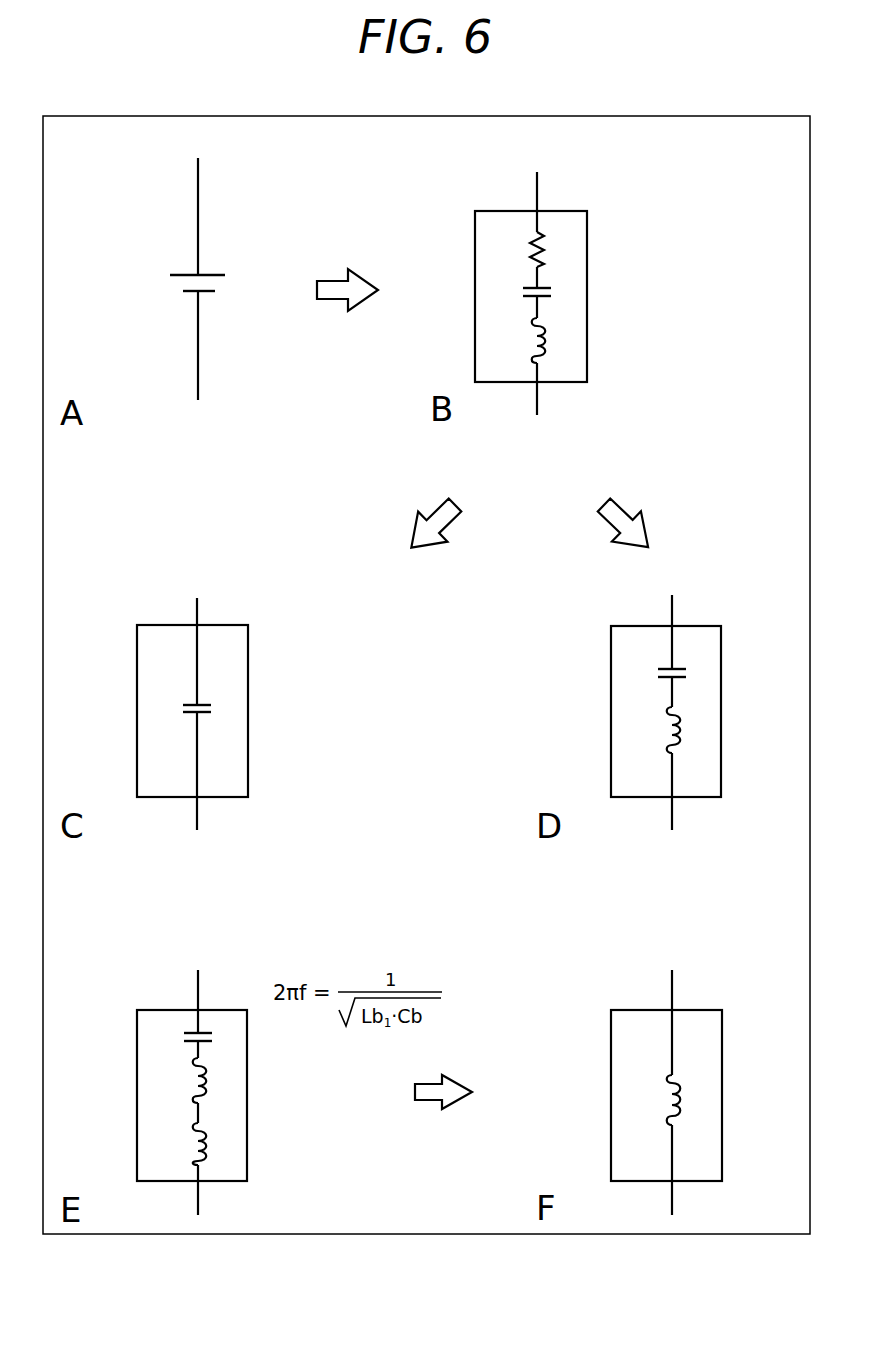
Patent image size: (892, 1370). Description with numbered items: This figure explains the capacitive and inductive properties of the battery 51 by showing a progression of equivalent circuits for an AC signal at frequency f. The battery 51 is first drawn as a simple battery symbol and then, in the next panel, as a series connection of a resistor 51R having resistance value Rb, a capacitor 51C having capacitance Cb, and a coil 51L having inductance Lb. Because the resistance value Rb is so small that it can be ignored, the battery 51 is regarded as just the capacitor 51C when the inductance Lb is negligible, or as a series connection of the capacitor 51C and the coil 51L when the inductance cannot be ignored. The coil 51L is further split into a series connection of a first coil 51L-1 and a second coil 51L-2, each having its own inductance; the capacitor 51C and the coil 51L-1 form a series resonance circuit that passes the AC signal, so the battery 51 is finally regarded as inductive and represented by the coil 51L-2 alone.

The battery 51 is at (185, 272).
The resistor 51R is at (552, 249).
The capacitor 51C is at (466, 664).
The coil 51L is at (638, 535).
The coil 51L-1 is at (214, 1084).
The coil 51L-2 is at (472, 1120).